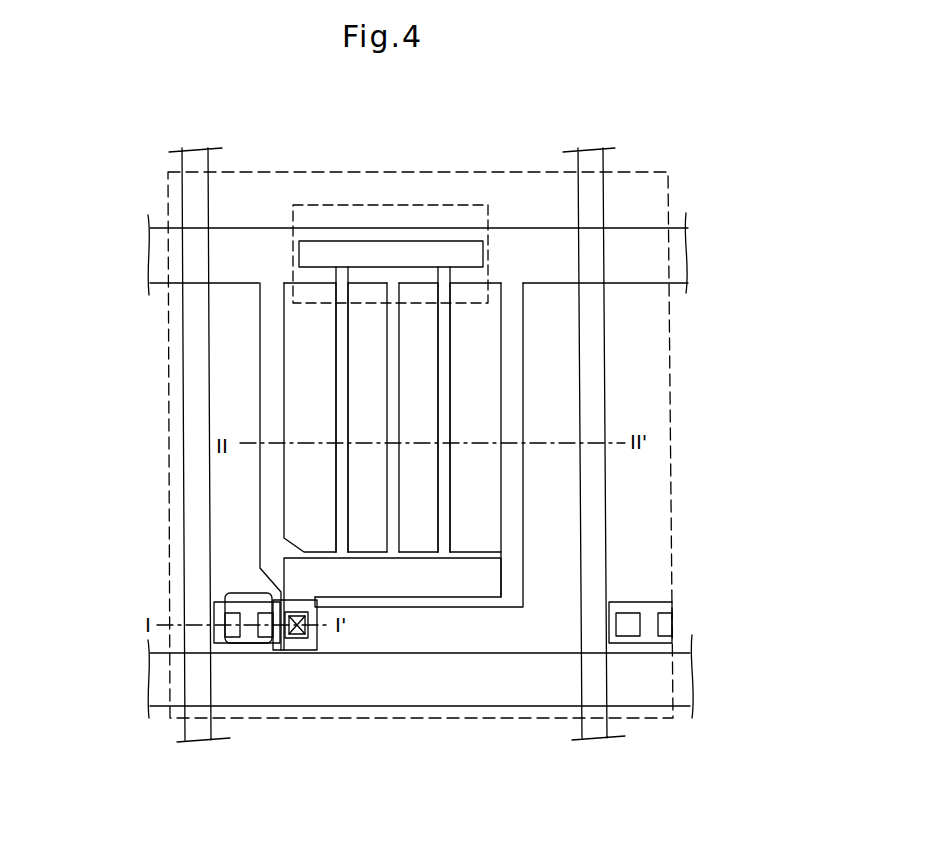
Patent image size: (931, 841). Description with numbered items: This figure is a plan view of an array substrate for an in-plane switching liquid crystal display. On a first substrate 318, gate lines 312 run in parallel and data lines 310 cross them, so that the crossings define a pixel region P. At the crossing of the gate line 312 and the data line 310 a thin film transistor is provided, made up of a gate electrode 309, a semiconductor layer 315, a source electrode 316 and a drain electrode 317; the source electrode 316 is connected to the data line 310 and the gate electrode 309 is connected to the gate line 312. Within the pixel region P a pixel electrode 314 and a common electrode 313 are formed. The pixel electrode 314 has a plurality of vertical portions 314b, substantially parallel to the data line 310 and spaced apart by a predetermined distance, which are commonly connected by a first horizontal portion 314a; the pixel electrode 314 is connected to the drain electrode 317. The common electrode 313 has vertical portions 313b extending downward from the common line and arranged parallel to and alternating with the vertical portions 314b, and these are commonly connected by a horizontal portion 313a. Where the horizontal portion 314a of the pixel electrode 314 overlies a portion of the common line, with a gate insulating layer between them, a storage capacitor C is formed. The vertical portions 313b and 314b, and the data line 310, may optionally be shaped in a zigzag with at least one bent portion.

The gate electrode 309 is at (247, 593).
The data line 310 is at (597, 410).
The gate line 312 is at (472, 690).
The common electrode 313 is at (550, 466).
The horizontal portion of common electrode 313a is at (515, 580).
The vertical portion of common electrode 313b is at (515, 498).
The pixel electrode 314 is at (243, 394).
The first horizontal portion of pixel electrode 314a is at (312, 256).
The vertical portion of pixel electrode 314b is at (340, 375).
The semiconductor layer 315 is at (213, 602).
The source electrode 316 is at (653, 255).
The drain electrode 317 is at (290, 653).
The first substrate 318 is at (670, 366).
The storage capacitor C is at (421, 205).
The pixel region P is at (647, 490).